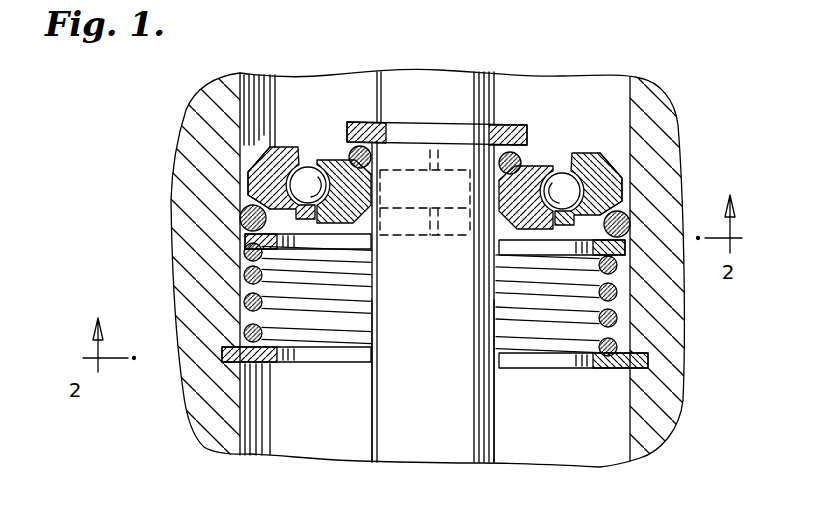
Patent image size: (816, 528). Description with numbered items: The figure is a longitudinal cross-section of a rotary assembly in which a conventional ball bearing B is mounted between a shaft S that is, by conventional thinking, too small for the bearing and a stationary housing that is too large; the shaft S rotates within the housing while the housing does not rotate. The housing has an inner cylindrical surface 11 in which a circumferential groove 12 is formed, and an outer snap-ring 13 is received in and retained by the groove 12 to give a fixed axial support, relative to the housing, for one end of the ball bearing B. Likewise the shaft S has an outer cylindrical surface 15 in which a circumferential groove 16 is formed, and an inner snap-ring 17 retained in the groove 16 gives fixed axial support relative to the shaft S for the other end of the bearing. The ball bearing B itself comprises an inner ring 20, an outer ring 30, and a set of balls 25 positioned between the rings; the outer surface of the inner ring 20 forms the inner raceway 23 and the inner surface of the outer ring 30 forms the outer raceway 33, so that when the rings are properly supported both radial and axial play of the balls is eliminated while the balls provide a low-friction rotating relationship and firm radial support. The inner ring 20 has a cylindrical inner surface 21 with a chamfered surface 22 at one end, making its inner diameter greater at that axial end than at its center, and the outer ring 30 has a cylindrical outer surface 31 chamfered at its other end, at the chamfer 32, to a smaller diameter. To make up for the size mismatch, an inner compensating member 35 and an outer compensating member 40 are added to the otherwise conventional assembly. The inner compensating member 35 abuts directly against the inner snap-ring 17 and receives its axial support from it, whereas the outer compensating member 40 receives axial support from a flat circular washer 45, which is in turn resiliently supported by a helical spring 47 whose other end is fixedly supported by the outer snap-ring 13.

The inner cylindrical surface 11 is at (623, 437).
The circumferential groove 12 is at (645, 364).
The outer snap-ring 13 is at (268, 362).
The outer cylindrical surface 15 is at (372, 437).
The circumferential groove 16 is at (440, 133).
The inner snap-ring 17 is at (366, 137).
The inner ring 20 is at (523, 168).
The cylindrical inner surface 21 is at (378, 195).
The chamfered surface 22 is at (378, 172).
The inner raceway 23 is at (330, 262).
The balls 25 is at (561, 185).
The outer ring 30 is at (588, 154).
The cylindrical outer surface 31 is at (246, 148).
The chamfer 32 is at (250, 182).
The outer raceway 33 is at (303, 147).
The inner compensating member 35 is at (350, 150).
The outer compensating member 40 is at (246, 220).
The flat circular washer 45 is at (620, 251).
The helical spring 47 is at (253, 307).
The ball bearing B is at (621, 157).
The shaft S is at (437, 437).